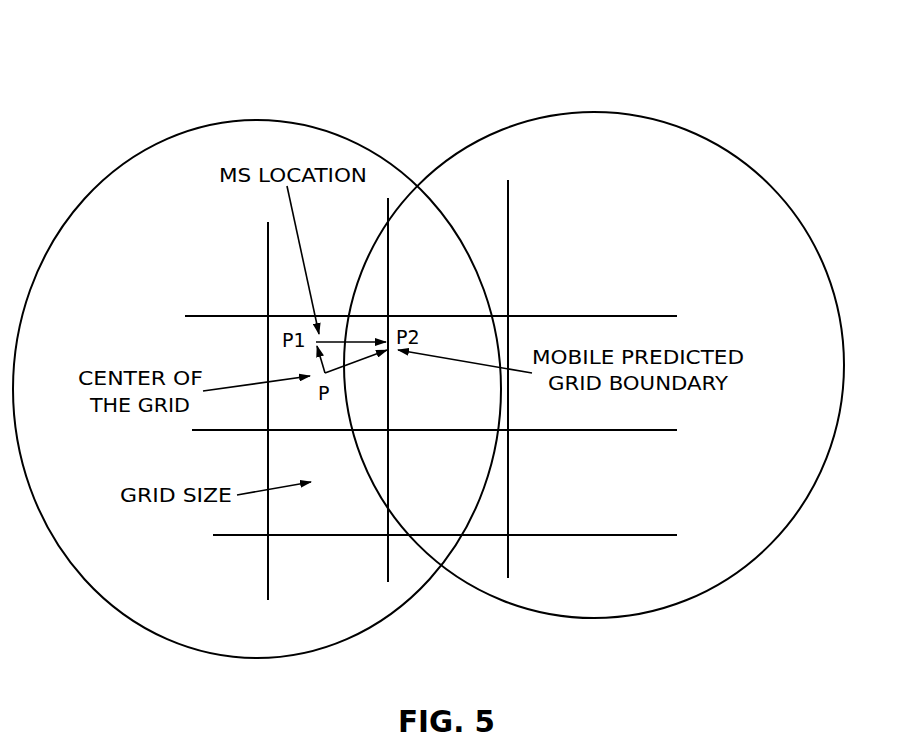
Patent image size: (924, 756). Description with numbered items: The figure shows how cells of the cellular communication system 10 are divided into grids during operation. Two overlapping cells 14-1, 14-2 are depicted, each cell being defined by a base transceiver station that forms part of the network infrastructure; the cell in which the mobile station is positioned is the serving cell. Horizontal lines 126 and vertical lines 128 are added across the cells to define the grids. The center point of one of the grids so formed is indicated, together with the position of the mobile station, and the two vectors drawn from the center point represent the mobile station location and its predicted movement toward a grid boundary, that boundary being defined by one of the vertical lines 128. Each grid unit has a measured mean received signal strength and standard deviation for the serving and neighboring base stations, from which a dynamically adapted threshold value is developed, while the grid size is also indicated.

The cellular communication system 10 is at (436, 56).
The cell 14-1 is at (260, 119).
The cell 14-2 is at (595, 112).
The horizontal lines 126 is at (650, 316).
The vertical lines 128 is at (268, 266).